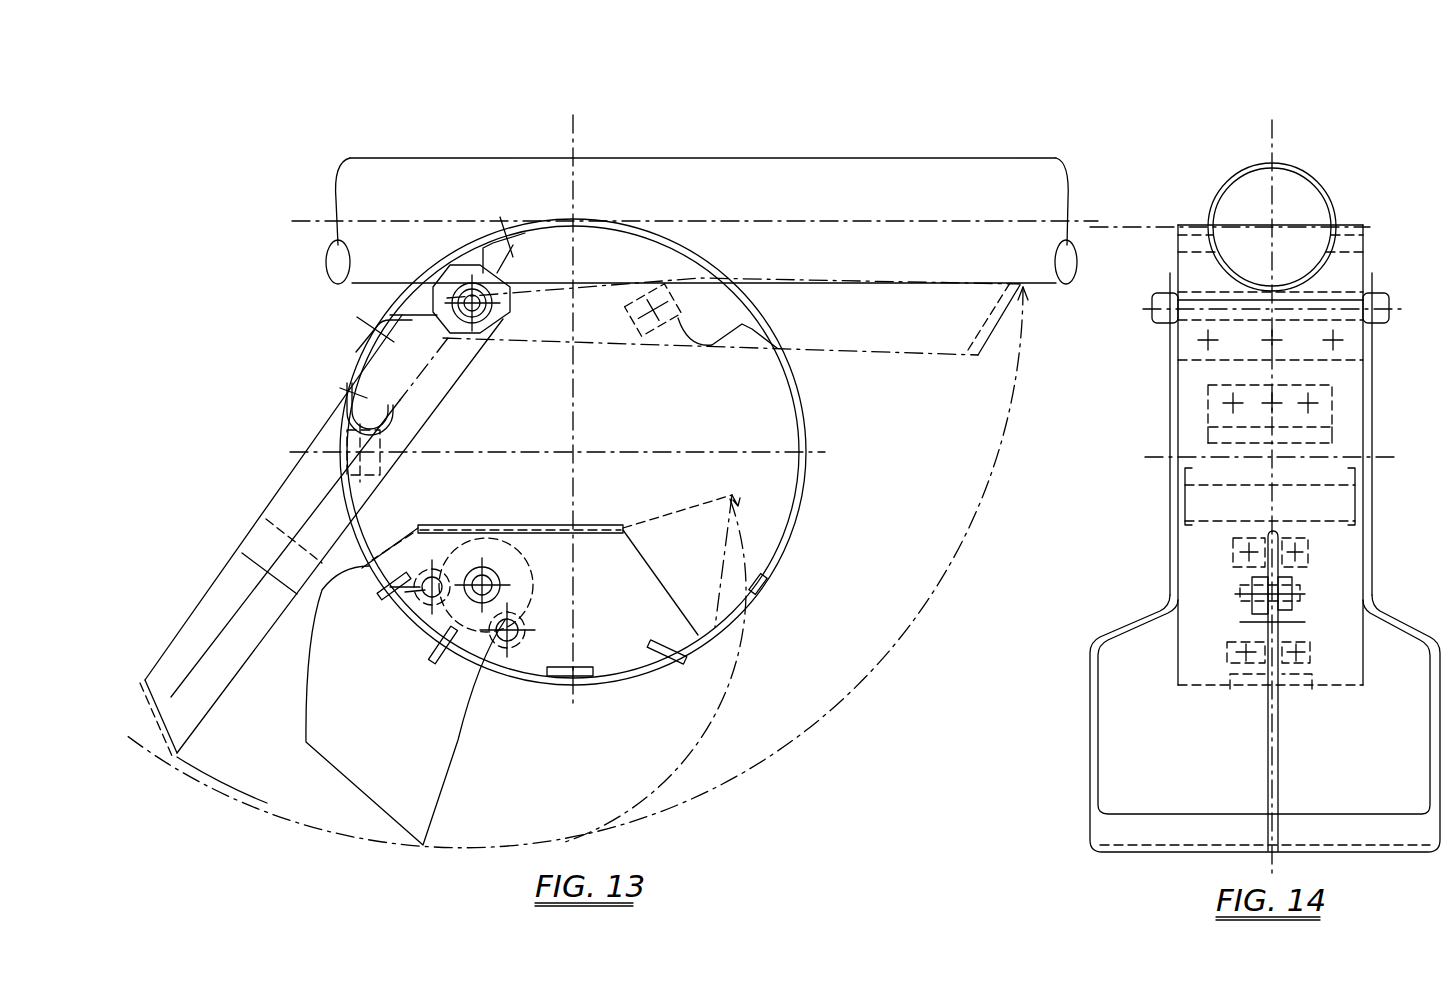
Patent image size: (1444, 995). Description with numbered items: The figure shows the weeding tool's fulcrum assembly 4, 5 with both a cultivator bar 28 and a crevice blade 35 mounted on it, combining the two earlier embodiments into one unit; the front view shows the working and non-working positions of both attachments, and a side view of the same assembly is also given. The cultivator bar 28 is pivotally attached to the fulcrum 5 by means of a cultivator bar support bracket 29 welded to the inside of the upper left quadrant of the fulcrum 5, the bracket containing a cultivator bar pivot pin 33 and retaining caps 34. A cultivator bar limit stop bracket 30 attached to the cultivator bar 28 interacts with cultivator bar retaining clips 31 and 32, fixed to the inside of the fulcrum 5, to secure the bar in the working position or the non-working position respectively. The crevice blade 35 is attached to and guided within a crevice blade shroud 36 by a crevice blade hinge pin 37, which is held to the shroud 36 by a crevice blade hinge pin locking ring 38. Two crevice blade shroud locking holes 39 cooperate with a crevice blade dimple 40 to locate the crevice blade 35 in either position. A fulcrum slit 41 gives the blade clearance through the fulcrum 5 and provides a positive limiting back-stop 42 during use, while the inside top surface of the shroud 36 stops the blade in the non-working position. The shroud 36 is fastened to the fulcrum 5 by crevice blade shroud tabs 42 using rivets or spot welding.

In FIG. 13, the fulcrum assembly 4 is at (684, 153).
In FIG. 14, the fulcrum assembly 4 is at (1215, 190).
In FIG. 13, the fulcrum 5 is at (731, 622).
In FIG. 14, the fulcrum 5 is at (1210, 690).
In FIG. 13, the cultivator bar 28 is at (200, 608).
In FIG. 14, the cultivator bar 28 is at (1085, 697).
In FIG. 13, the cultivator bar support bracket 29 is at (402, 315).
In FIG. 13, the cultivator bar limit stop bracket 30 is at (355, 468).
In FIG. 14, the cultivator bar limit stop bracket 30 is at (1215, 523).
In FIG. 13, the cultivator bar retaining clip 31 is at (396, 426).
In FIG. 14, the cultivator bar retaining clip 31 is at (1208, 412).
In FIG. 13, the cultivator bar retaining clip 32 is at (703, 342).
In FIG. 14, the cultivator bar pivot pin 33 is at (1333, 313).
In FIG. 14, the retaining caps 34 is at (1155, 322).
In FIG. 13, the crevice blade 35 is at (368, 803).
In FIG. 14, the crevice blade 35 is at (1279, 783).
In FIG. 13, the crevice blade shroud 36 is at (628, 652).
In FIG. 14, the crevice blade shroud 36 is at (1258, 622).
In FIG. 13, the crevice blade hinge pin 37 is at (483, 583).
In FIG. 14, the crevice blade hinge pin 37 is at (1258, 582).
In FIG. 14, the crevice blade hinge pin locking ring 38 is at (1285, 578).
In FIG. 13, the crevice blade shroud locking holes 39 is at (430, 592).
In FIG. 13, the crevice blade dimple 40 is at (426, 591).
In FIG. 13, the fulcrum slit 41 is at (757, 585).
In FIG. 13, the crevice blade shroud tabs 42 is at (394, 586).
In FIG. 14, the crevice blade shroud tabs 42 is at (1228, 652).